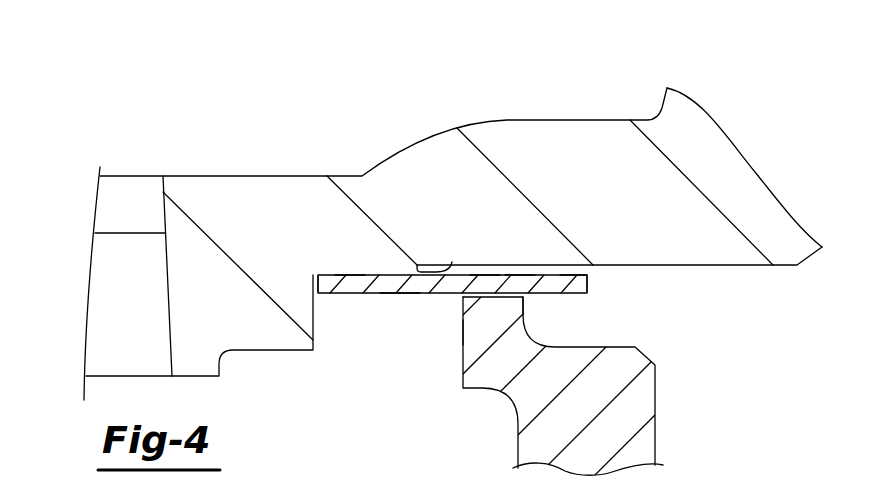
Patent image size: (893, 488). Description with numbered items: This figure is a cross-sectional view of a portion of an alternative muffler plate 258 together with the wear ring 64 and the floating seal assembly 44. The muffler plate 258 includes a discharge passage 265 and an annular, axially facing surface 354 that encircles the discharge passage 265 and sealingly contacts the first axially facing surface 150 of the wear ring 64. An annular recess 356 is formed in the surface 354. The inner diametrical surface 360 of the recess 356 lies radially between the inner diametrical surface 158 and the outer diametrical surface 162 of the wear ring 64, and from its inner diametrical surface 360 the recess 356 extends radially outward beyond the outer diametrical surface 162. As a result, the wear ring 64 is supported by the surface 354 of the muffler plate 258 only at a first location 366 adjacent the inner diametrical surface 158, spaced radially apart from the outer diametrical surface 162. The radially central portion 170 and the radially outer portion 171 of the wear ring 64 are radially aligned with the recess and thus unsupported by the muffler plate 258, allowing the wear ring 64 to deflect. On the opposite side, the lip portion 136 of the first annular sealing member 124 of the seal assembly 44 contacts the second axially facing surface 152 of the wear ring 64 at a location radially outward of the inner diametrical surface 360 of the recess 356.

The muffler plate 258 is at (542, 119).
The first axially facing surface 150 is at (497, 280).
The radially central portion 170 is at (485, 275).
The inner diametrical surface 360 is at (452, 262).
The first location 366 is at (351, 275).
The annular recess 356 is at (518, 275).
The radially outer portion 171 is at (576, 275).
The outer diametrical surface 162 is at (588, 287).
The discharge passage 265 is at (162, 213).
The inner diametrical surface 158 is at (313, 285).
The annular axially facing surface 354 is at (371, 293).
The second axially facing surface 152 is at (400, 293).
The lip portion 136 is at (463, 330).
The wear ring 64 is at (537, 296).
The floating seal assembly 44 is at (539, 385).
The first annular sealing member 124 is at (643, 397).